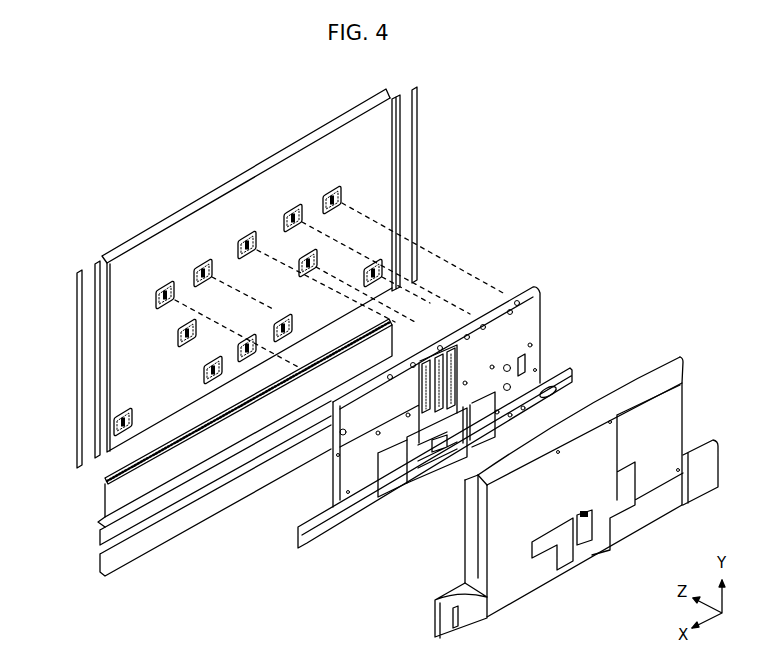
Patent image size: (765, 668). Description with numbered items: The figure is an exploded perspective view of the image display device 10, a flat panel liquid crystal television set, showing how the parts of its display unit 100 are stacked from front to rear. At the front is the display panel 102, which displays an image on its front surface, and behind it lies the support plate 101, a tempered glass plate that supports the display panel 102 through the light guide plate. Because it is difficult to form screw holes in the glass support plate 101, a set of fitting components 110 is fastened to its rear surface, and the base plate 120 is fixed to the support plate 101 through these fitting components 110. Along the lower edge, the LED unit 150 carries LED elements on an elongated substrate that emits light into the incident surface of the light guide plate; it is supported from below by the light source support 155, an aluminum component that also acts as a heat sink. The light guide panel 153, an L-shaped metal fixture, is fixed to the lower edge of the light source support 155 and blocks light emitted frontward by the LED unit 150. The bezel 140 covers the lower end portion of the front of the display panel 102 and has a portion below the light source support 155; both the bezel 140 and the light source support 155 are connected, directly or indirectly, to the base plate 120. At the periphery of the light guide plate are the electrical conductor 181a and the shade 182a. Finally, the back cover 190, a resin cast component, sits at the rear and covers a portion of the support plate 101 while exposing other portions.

The image display device 10 is at (569, 165).
The display unit 100 is at (465, 73).
The support plate 101 is at (378, 162).
The display panel 102 is at (358, 102).
The fitting components 110 is at (167, 287).
The base plate 120 is at (542, 322).
The bezel 140 is at (133, 565).
The LED unit 150 is at (104, 486).
The light guide panel 153 is at (100, 546).
The light source support 155 is at (97, 525).
The electrical conductor 181a is at (95, 266).
The shade 182a is at (77, 276).
The back cover 190 is at (532, 577).